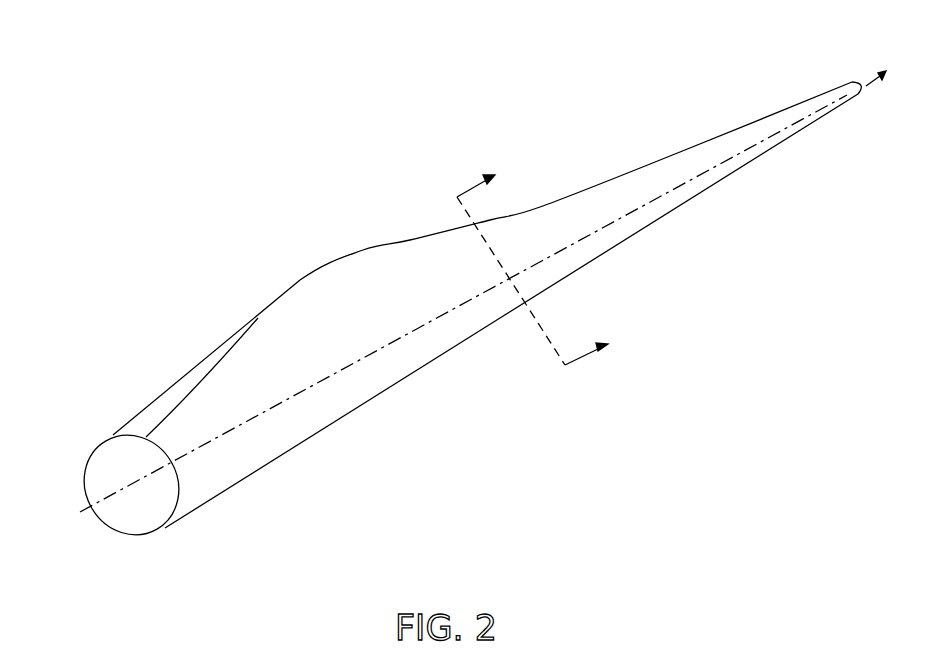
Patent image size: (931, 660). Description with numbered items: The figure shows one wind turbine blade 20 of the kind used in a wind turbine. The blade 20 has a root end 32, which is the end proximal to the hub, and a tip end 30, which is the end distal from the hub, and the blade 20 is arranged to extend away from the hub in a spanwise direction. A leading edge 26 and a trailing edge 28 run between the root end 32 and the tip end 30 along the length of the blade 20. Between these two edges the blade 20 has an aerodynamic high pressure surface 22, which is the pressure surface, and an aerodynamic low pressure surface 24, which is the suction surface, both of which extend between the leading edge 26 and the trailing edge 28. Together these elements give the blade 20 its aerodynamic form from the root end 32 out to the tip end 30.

The wind turbine blade 20 is at (461, 285).
The aerodynamic high pressure surface 22 is at (323, 408).
The aerodynamic low pressure surface 24 is at (155, 410).
The leading edge 26 is at (702, 198).
The trailing edge 28 is at (307, 273).
The tip end 30 is at (853, 80).
The root end 32 is at (97, 472).